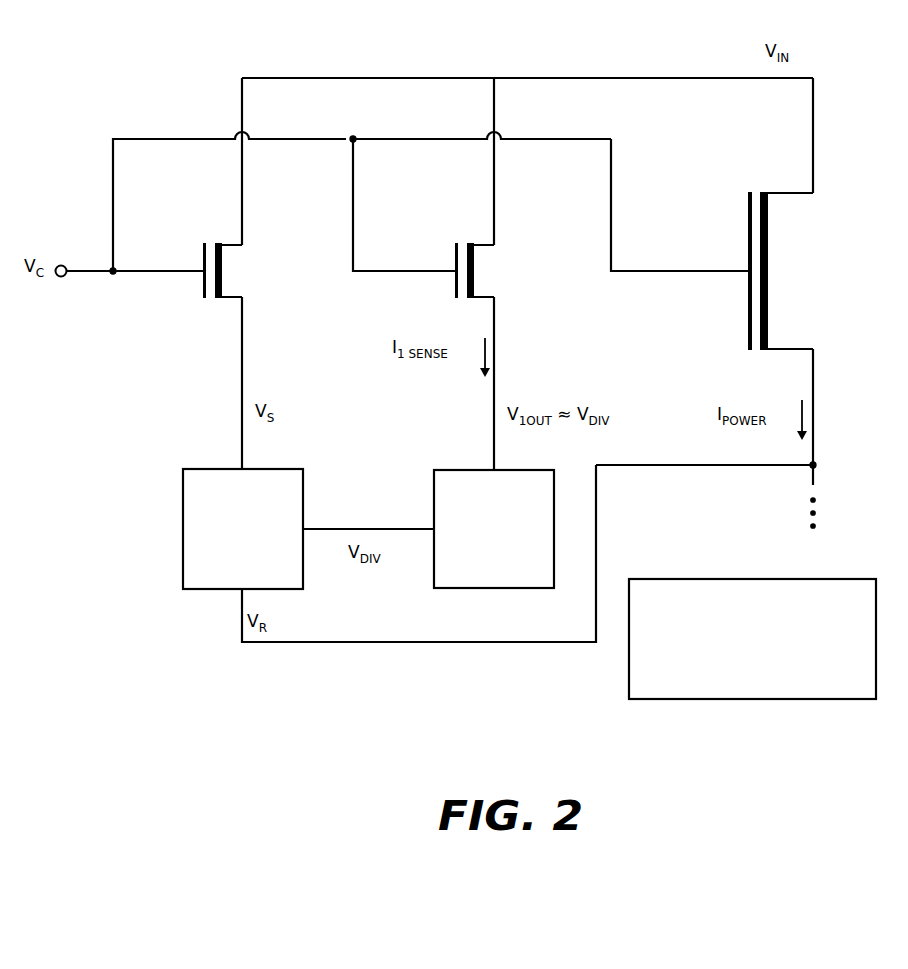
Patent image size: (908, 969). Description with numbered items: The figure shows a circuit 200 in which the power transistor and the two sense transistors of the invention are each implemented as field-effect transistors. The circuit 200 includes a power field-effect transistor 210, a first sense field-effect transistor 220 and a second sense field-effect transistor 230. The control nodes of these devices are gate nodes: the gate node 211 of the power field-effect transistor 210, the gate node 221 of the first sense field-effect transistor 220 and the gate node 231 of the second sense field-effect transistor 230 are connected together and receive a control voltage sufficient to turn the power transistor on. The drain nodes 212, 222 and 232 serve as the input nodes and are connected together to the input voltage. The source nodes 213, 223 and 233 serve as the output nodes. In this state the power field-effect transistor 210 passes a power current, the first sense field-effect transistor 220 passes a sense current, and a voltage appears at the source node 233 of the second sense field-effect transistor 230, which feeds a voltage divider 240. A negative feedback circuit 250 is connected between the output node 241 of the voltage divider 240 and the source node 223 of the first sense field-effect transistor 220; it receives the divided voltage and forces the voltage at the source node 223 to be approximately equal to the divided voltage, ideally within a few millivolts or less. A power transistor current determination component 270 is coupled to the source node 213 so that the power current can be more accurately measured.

The circuit 200 is at (520, 35).
The power field-effect transistor 210 is at (783, 275).
The gate node of the power field-effect transistor 211 is at (673, 270).
The drain node of the power field-effect transistor 212 is at (815, 135).
The source node of the power field-effect transistor 213 is at (815, 410).
The first sense field-effect transistor 220 is at (486, 275).
The gate node of the first sense field-effect transistor 221 is at (392, 269).
The drain node of the first sense field-effect transistor 222 is at (496, 197).
The source node of the first sense field-effect transistor 223 is at (496, 350).
The second sense field-effect transistor 230 is at (231, 273).
The gate node of the second sense field-effect transistor 231 is at (148, 269).
The drain node of the second sense field-effect transistor 232 is at (243, 194).
The source node of the second sense field-effect transistor 233 is at (243, 355).
The voltage divider 240 is at (228, 560).
The output node of the voltage divider 241 is at (355, 528).
The negative feedback circuit 250 is at (479, 571).
The power transistor current determination component 270 is at (737, 671).